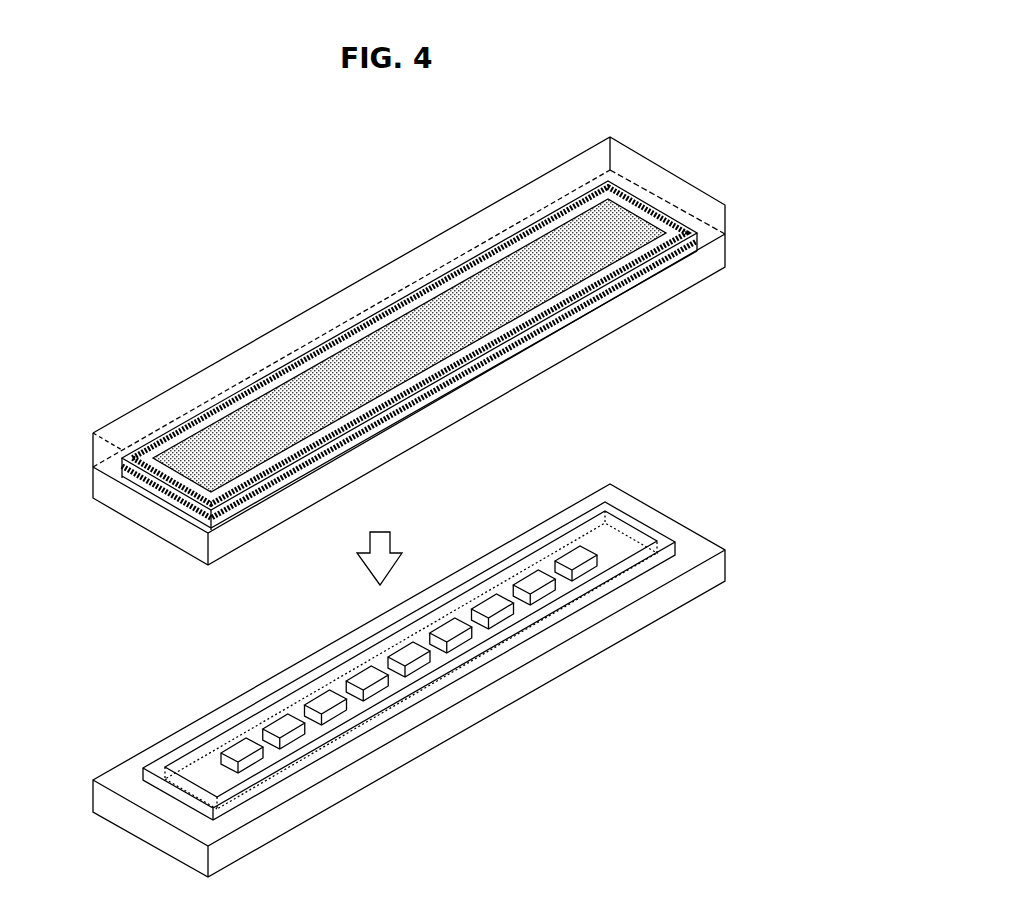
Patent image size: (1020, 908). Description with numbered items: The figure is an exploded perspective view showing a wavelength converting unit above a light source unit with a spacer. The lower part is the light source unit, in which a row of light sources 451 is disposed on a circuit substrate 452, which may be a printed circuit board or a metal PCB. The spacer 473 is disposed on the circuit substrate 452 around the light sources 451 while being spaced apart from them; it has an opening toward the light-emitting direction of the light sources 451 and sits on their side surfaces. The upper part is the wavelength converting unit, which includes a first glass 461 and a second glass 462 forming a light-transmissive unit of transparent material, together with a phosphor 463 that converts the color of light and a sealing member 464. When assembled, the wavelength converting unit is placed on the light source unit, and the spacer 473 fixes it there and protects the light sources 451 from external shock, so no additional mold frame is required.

The light source 451 is at (480, 637).
The circuit substrate 452 is at (657, 518).
The first glass 461 is at (93, 467).
The second glass 462 is at (132, 505).
The phosphor 463 is at (430, 332).
The sealing member 464 is at (512, 240).
The spacer 473 is at (580, 597).